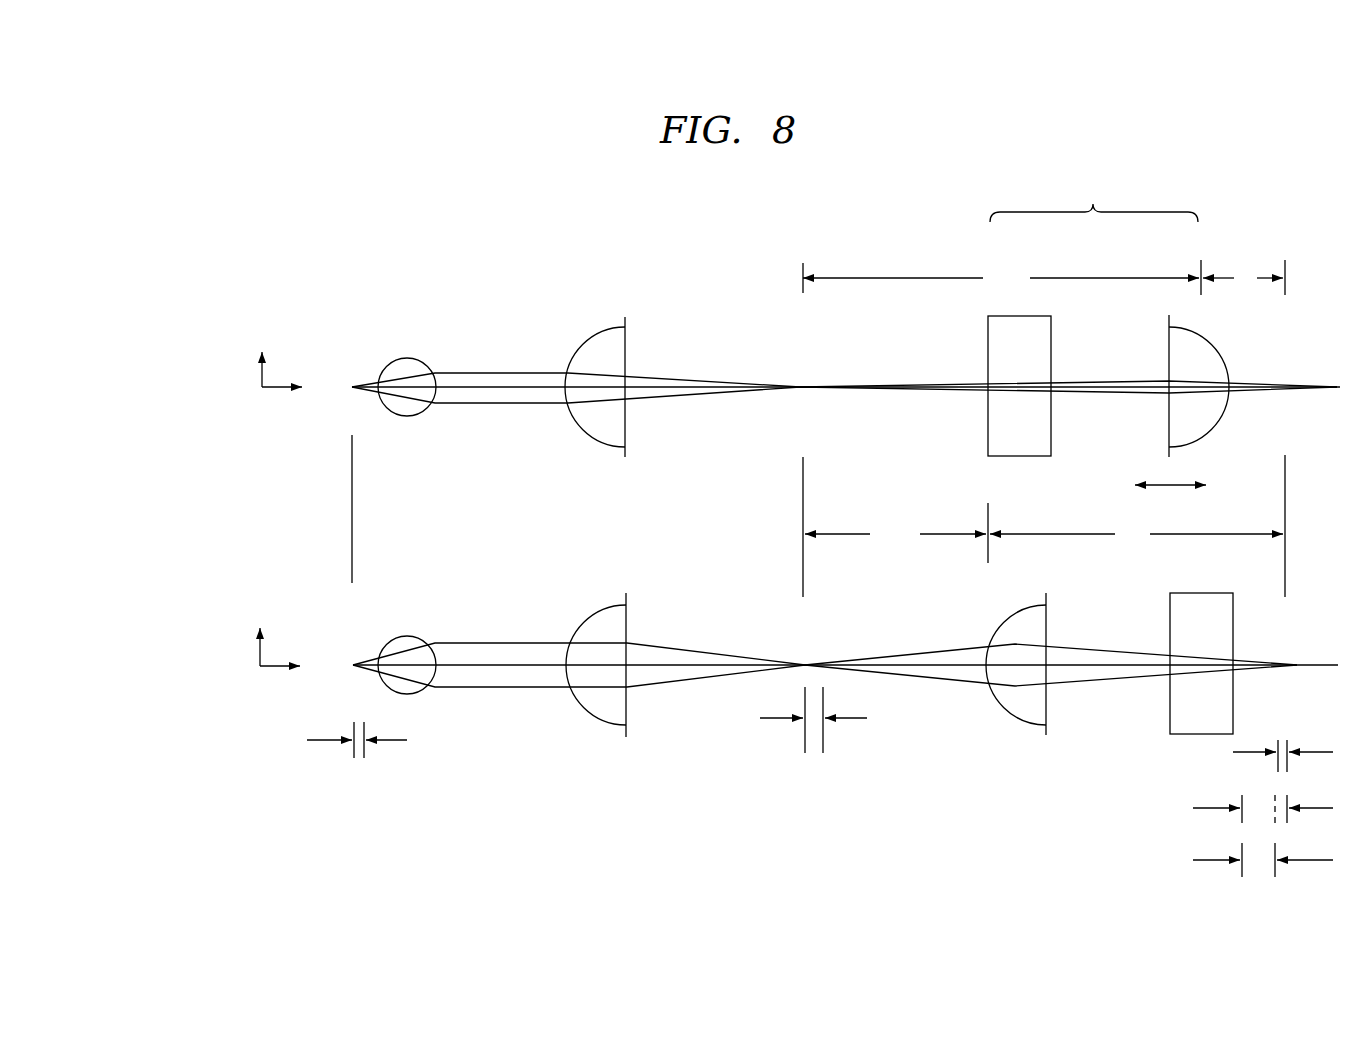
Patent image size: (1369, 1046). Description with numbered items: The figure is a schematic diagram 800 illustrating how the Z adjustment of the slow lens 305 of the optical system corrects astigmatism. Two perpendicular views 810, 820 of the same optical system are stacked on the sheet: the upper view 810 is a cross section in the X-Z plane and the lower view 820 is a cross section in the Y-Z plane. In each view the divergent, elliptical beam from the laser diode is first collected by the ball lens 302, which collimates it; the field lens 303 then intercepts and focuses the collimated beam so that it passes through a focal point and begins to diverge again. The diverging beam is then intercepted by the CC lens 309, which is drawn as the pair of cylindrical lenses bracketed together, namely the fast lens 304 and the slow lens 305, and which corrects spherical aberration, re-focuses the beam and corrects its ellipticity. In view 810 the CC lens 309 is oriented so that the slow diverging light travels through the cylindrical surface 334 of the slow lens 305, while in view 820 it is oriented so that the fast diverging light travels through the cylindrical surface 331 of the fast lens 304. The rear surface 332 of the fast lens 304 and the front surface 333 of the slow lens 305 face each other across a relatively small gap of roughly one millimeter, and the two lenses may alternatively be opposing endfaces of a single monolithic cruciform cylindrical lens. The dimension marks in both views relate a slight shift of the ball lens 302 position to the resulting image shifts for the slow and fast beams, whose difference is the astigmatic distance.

The schematic diagram 800 is at (746, 181).
The view in the X-Z plane 810 is at (195, 357).
The view in the Y-Z plane 820 is at (195, 639).
The ball lens 302 is at (407, 417).
The field lens 303 is at (597, 440).
The fast lens 304 is at (978, 426).
The slow lens 305 is at (1238, 425).
The CC lens 309 is at (1094, 198).
The cylindrical surface of fast lens 331 is at (1003, 622).
The rear surface of fast lens 332 is at (1052, 428).
The front surface of slow lens 333 is at (1167, 349).
The cylindrical surface of slow lens 334 is at (1215, 350).